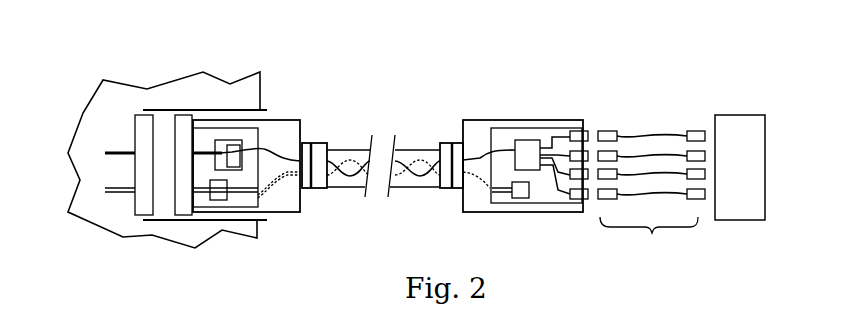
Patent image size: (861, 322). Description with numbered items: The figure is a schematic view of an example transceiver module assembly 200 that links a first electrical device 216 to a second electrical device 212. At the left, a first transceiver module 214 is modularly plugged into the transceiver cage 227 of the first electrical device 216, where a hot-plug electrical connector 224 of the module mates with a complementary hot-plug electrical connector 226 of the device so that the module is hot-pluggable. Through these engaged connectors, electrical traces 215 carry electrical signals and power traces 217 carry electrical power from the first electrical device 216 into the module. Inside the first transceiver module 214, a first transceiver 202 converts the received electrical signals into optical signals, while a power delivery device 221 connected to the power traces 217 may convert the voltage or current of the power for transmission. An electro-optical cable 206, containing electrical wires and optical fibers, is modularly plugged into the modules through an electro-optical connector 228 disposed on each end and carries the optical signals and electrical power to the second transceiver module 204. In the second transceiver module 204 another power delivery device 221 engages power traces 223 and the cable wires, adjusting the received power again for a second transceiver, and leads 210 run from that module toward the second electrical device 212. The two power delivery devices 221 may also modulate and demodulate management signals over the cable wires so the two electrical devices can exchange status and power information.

The transceiver module assembly 200 is at (130, 70).
The transceiver cage 227 is at (193, 121).
The hot-plug electrical connector 224 is at (186, 118).
The complementary hot-plug electrical connector 226 is at (133, 143).
The electrical traces 215 is at (103, 153).
The power traces 217 is at (110, 193).
The first electrical device 216 is at (127, 222).
The power delivery device 221 is at (220, 198).
The first transceiver 202 is at (240, 162).
The first transceiver module 214 is at (276, 120).
The electro-optical cable 206 is at (367, 131).
The electro-optical connector 228 is at (332, 188).
The second transceiver module 204 is at (493, 118).
The power traces 223 is at (495, 190).
The output leads 210 is at (651, 199).
The second electrical device 212 is at (757, 170).